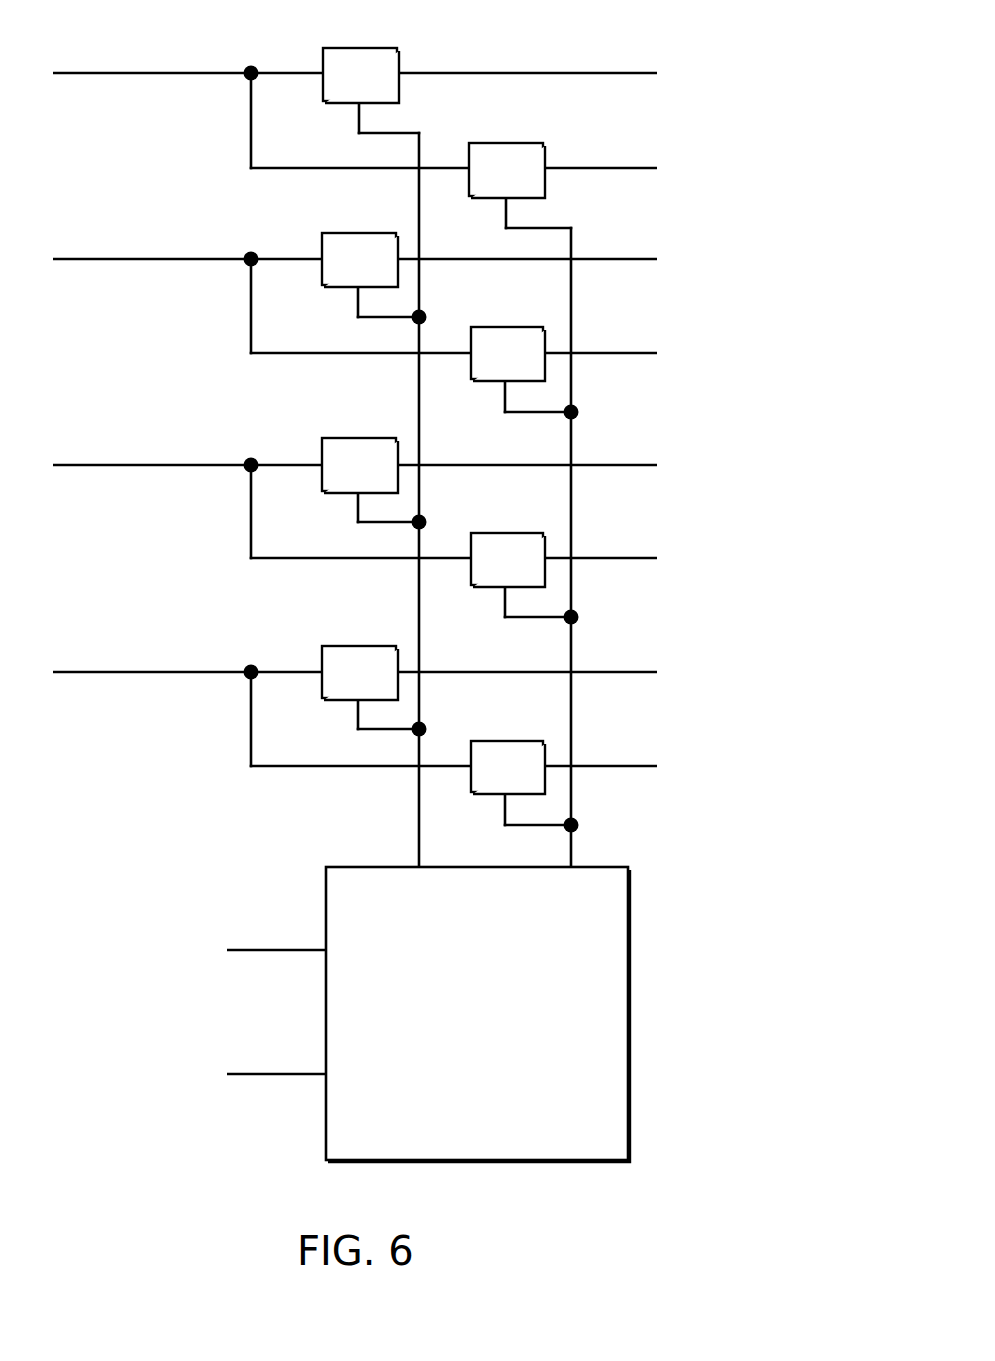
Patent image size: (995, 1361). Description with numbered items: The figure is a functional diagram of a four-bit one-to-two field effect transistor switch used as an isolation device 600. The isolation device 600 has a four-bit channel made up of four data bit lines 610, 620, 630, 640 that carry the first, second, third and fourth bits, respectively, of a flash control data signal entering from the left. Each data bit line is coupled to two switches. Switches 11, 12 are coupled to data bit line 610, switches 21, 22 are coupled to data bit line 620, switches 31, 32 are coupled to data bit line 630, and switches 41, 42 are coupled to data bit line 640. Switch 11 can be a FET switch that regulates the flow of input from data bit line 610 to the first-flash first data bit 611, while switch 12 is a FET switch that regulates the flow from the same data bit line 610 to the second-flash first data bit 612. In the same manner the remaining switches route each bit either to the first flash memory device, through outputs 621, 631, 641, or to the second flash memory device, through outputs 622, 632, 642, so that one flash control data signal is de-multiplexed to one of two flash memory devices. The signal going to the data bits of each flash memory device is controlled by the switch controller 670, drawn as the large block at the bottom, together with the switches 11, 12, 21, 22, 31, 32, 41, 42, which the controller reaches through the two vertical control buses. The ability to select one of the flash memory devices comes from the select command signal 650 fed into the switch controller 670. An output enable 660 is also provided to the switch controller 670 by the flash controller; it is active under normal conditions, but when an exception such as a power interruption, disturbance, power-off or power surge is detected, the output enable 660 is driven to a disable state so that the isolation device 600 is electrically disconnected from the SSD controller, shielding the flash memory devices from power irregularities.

The isolation device 600 is at (546, 27).
The data bit line 610 is at (99, 74).
The flash 1 data bit1 611 is at (634, 74).
The flash 2 data bit1 612 is at (634, 169).
The data bit line 620 is at (99, 260).
The flash 1 data bit2 621 is at (627, 260).
The flash 2 data bit2 622 is at (627, 354).
The data bit line 630 is at (99, 466).
The flash 1 data bit3 631 is at (627, 466).
The flash 2 data bit3 632 is at (627, 559).
The data bit line 640 is at (99, 673).
The flash 1 data bit4 641 is at (627, 673).
The flash 2 data bit4 642 is at (627, 767).
The select command signal 650 is at (259, 951).
The output enable 660 is at (259, 1075).
The switch controller 670 is at (478, 1014).
The switch 11 is at (361, 75).
The switch 12 is at (507, 170).
The switch 21 is at (360, 260).
The switch 22 is at (508, 354).
The switch 31 is at (360, 465).
The switch 32 is at (508, 560).
The switch 41 is at (360, 673).
The switch 42 is at (508, 767).